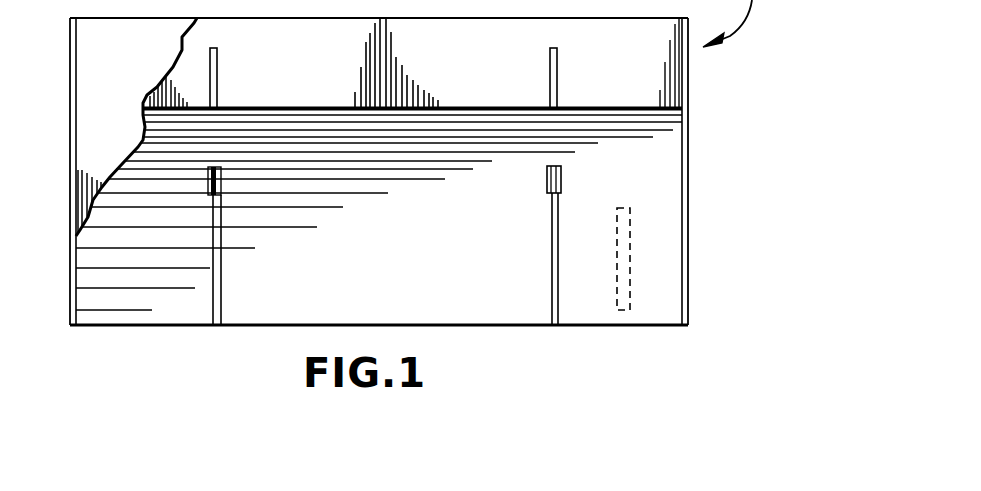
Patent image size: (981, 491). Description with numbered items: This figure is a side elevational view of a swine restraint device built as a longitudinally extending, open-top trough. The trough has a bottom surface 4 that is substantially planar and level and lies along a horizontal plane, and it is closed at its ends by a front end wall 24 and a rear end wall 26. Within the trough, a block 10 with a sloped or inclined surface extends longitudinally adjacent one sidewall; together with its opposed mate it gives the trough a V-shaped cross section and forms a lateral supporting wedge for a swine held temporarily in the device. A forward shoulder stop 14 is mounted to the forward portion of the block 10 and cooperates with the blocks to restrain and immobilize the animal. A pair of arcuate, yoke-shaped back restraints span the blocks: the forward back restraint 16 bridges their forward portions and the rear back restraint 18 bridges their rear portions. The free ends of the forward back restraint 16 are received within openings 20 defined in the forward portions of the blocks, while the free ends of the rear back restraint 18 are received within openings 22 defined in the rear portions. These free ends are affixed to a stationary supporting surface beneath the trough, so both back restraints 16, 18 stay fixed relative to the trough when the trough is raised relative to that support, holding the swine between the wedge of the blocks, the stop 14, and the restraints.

The bottom surface 4 is at (497, 325).
The block 10 is at (384, 264).
The forward shoulder stop 14 is at (629, 224).
The back restraint 16 is at (557, 86).
The back restraint 18 is at (218, 88).
The openings 20 is at (561, 182).
The openings 22 is at (221, 180).
The front end wall 24 is at (688, 238).
The rear end wall 26 is at (68, 212).